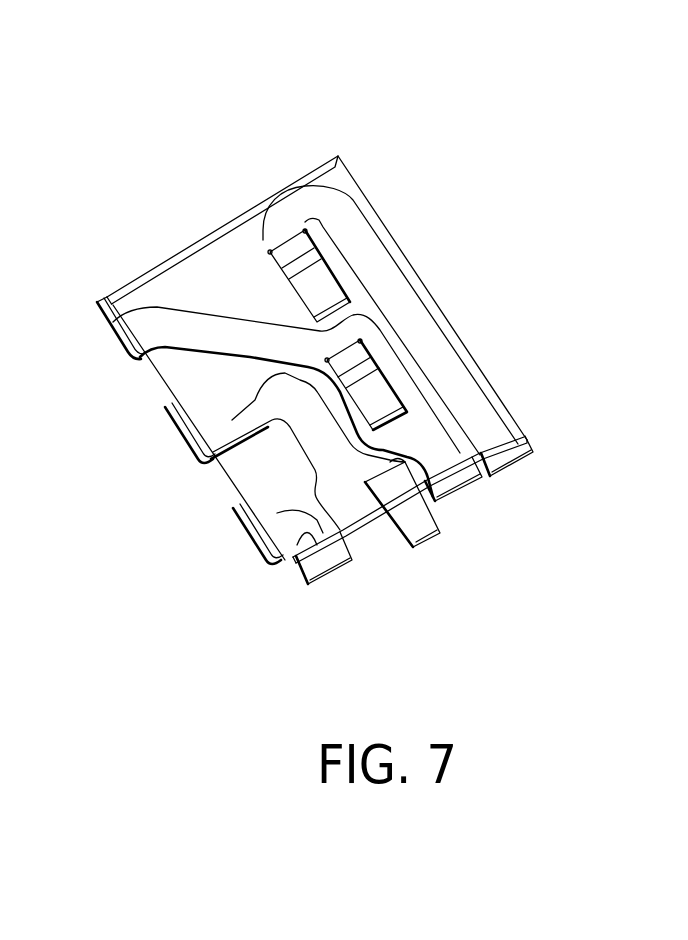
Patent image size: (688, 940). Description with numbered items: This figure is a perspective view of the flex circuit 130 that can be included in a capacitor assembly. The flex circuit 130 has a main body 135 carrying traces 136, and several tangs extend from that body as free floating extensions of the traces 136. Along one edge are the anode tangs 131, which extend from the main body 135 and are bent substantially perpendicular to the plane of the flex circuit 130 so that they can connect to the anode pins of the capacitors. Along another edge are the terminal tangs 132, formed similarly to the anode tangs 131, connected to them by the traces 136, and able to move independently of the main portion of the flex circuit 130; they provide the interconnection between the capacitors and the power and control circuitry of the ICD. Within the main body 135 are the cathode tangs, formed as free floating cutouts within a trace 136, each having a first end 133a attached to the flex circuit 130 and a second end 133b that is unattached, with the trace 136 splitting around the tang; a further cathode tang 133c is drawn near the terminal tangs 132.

The flex circuit 130 is at (422, 100).
The tangs 131 is at (250, 535).
The terminal tangs 132 is at (363, 533).
The first end 133a is at (289, 246).
The second end 133b is at (372, 387).
The third bent tab 133c is at (423, 520).
The main body 135 is at (243, 237).
The traces 136 is at (160, 323).